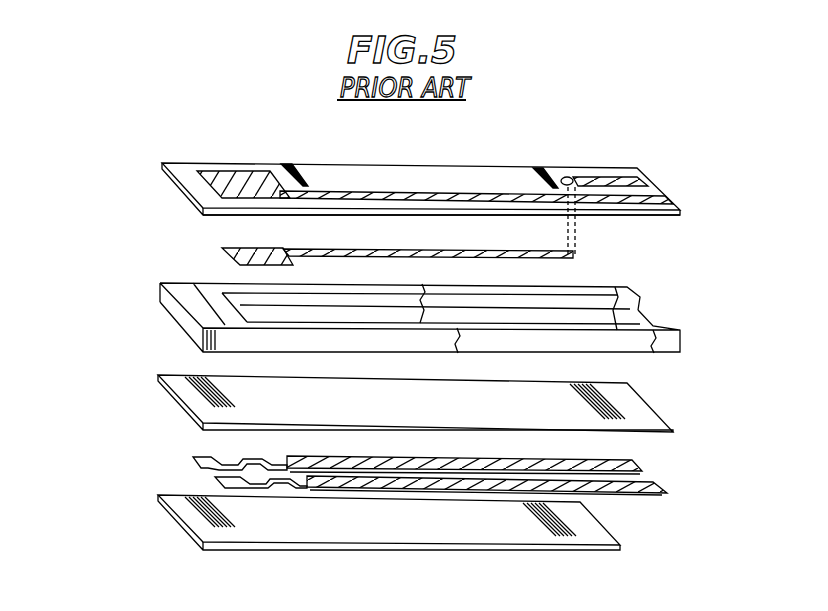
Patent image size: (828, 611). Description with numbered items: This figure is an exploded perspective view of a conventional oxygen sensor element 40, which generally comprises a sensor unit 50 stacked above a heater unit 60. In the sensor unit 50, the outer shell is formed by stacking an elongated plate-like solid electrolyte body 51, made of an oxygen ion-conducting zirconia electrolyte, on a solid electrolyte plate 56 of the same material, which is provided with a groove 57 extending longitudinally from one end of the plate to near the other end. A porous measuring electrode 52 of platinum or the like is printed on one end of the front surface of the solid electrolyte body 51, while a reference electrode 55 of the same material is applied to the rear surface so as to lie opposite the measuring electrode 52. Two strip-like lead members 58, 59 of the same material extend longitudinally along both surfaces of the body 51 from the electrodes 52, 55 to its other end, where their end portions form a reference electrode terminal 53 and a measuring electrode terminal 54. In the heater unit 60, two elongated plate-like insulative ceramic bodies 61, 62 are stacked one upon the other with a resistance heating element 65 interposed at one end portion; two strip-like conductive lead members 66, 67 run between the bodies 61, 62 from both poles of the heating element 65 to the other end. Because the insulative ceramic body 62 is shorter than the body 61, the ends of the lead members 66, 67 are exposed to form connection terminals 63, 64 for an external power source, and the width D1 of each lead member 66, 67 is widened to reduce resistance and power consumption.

The oxygen sensor element 40 is at (95, 493).
The sensor unit 50 is at (140, 155).
The solid electrolyte body 51 is at (370, 162).
The measuring electrode 52 is at (245, 184).
The reference electrode terminal 53 is at (640, 178).
The measuring electrode terminal 54 is at (665, 208).
The reference electrode 55 is at (224, 255).
The solid electrolyte plate 56 is at (627, 287).
The groove 57 is at (632, 320).
The lead member 58 is at (433, 196).
The lead member 59 is at (460, 252).
The heater unit 60 is at (140, 372).
The insulative ceramic body 61 is at (657, 413).
The insulative ceramic body 62 is at (607, 536).
The connection terminal 63 is at (628, 467).
The connection terminal 64 is at (652, 495).
The resistance heating element 65 is at (193, 465).
The conductive lead member 66 is at (465, 463).
The conductive lead member 67 is at (502, 488).
The width of lead member D1 is at (662, 480).